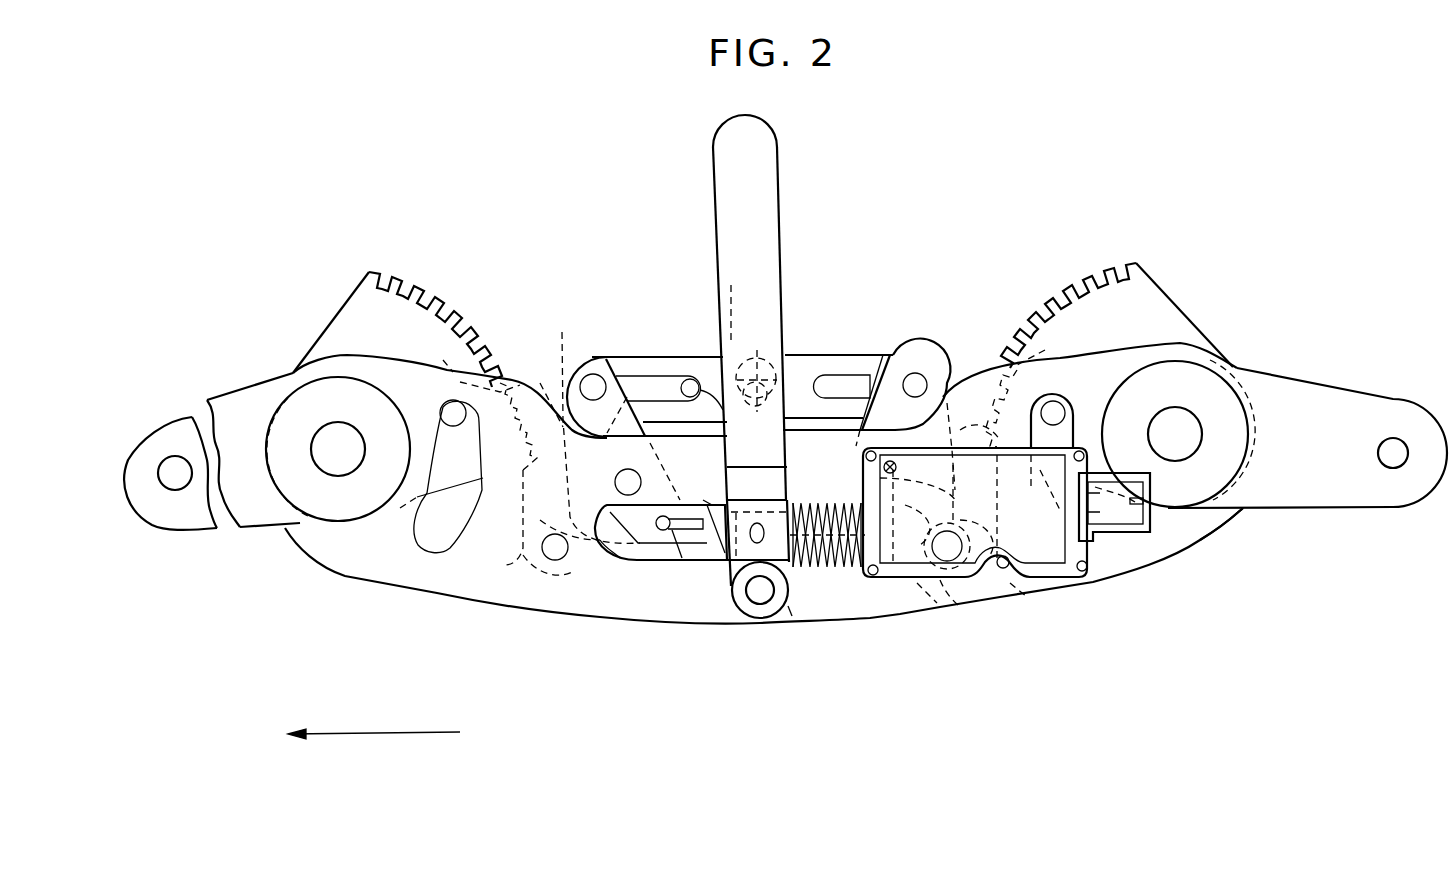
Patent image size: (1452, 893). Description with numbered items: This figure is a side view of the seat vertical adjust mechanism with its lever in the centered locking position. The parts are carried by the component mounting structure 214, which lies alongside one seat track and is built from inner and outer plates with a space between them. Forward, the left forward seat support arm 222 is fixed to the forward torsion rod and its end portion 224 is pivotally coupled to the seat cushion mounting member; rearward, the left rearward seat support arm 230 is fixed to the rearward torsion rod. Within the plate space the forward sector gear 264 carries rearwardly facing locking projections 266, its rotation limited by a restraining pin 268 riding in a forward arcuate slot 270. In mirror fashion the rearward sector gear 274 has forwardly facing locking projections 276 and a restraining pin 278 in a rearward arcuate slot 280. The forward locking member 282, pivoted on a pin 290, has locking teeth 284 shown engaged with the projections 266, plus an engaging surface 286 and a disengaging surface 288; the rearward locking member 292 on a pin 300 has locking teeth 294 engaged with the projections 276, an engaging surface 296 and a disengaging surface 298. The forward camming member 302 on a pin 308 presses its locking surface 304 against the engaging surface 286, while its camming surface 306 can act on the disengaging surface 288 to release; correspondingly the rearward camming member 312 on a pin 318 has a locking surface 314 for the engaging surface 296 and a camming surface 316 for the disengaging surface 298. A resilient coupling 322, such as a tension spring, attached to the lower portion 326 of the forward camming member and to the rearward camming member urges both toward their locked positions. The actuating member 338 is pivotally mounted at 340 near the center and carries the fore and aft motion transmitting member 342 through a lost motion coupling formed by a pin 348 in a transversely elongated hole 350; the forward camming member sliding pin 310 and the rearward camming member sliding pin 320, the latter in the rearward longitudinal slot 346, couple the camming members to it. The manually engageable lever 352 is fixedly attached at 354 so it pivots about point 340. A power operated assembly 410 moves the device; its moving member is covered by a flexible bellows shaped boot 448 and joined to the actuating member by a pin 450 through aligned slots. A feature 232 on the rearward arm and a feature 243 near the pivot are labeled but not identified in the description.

The component mounting structure 214 is at (455, 602).
The left forward seat support arm 222 is at (207, 400).
The end portion 224 is at (150, 432).
The left rearward seat support arm 230 is at (1300, 378).
The mounting hole 232 is at (1400, 397).
The pivot 243 is at (786, 614).
The forward sector gear 264 is at (318, 345).
The locking projections 266 is at (427, 288).
The restraining pin 268 is at (453, 405).
The forward arcuate slot 270 is at (432, 552).
The rearward sector gear 274 is at (1175, 322).
The locking projections 276 is at (1105, 272).
The restraining pin 278 is at (1055, 410).
The rearward arcuate slot 280 is at (1152, 575).
The forward locking member 282 is at (525, 560).
The locking teeth 284 is at (464, 363).
The engaging surface 286 is at (560, 370).
The disengaging surface 288 is at (620, 560).
The pin 290 is at (560, 560).
The rearward locking member 292 is at (1028, 598).
The locking teeth 294 is at (1049, 345).
The engaging surface 296 is at (982, 430).
The disengaging surface 298 is at (950, 608).
The pin 300 is at (996, 541).
The forward camming member 302 is at (642, 362).
The locking surface 304 is at (532, 385).
The camming surface 306 is at (640, 560).
The pin 308 is at (616, 480).
The forward camming member sliding pin 310 is at (592, 384).
The rearward camming member 312 is at (874, 368).
The locking surface 314 is at (963, 360).
The camming surface 316 is at (893, 580).
The pin 318 is at (850, 478).
The rearward camming member sliding pin 320 is at (915, 377).
The resilient coupling 322 is at (703, 500).
The lower portion 326 is at (690, 560).
The actuating member 338 is at (748, 334).
The pivot point 340 is at (772, 592).
The fore and aft motion transmitting member 342 is at (615, 355).
The rearward longitudinal slot 346 is at (820, 377).
The pin 348 is at (757, 348).
The transversely elongated hole 350 is at (787, 352).
The manually engageable lever 352 is at (768, 146).
The attachment point 354 is at (760, 475).
The power operated assembly 410 is at (1047, 443).
The flexible bellows shaped boot 448 is at (896, 468).
The pin 450 is at (763, 523).